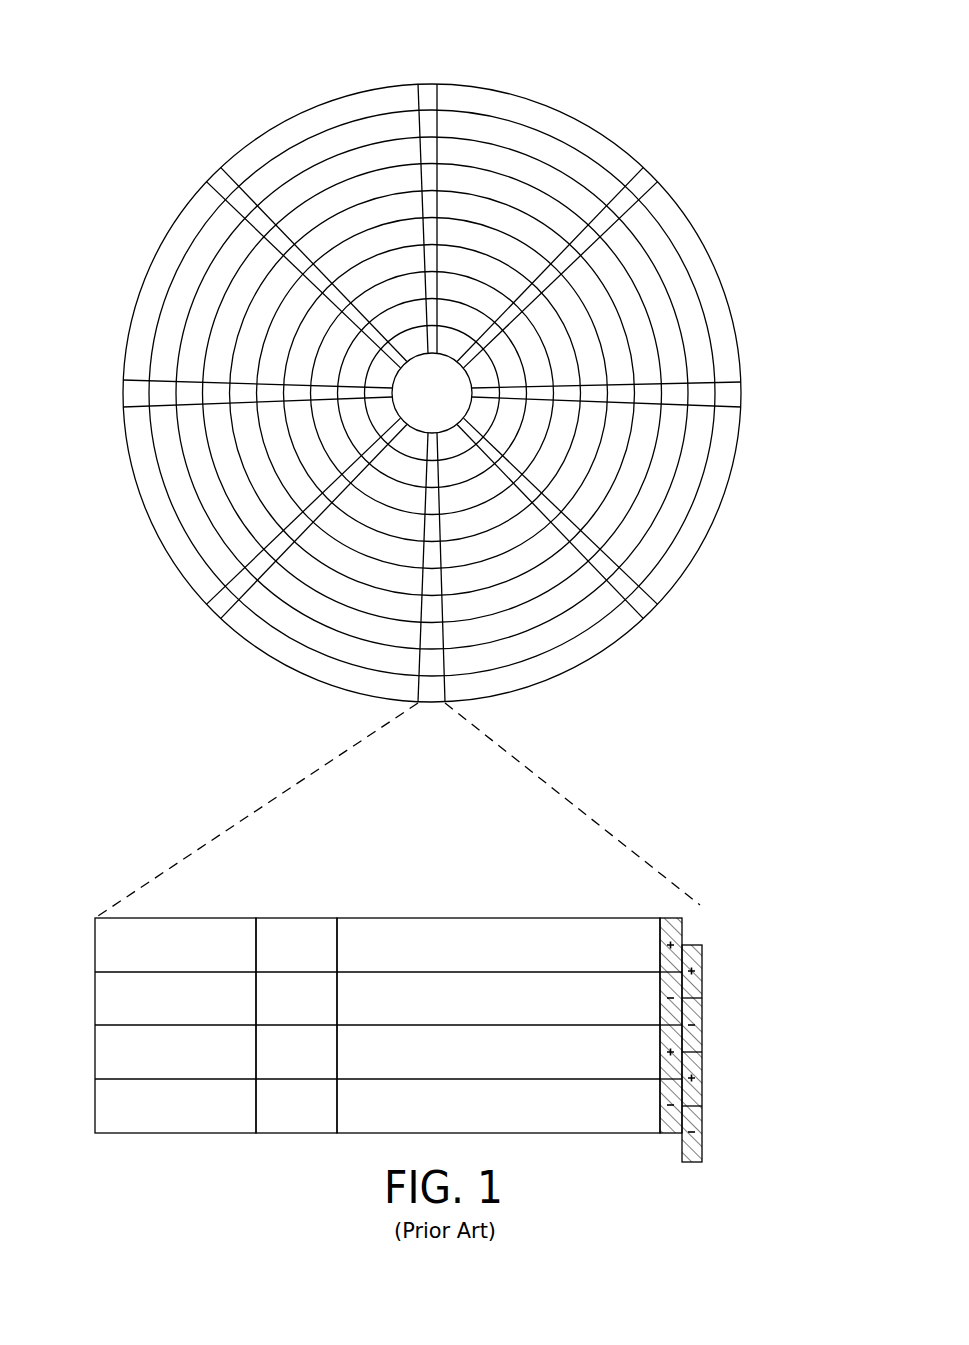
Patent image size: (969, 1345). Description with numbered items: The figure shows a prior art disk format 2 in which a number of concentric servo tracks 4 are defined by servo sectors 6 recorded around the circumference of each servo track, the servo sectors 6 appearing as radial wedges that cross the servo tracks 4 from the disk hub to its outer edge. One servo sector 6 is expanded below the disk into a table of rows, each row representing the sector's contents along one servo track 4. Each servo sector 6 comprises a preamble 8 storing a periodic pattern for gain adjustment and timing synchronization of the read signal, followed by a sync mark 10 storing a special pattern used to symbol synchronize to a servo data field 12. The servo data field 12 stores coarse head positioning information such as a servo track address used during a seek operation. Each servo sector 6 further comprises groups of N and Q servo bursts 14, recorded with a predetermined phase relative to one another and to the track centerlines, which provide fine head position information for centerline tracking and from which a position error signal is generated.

The disk format 2 is at (204, 87).
The servo tracks 4 is at (538, 146).
The servo sectors 6 is at (297, 776).
The preamble 8 is at (182, 917).
The sync mark 10 is at (299, 917).
The servo data field 12 is at (486, 917).
The servo bursts 14 is at (697, 918).